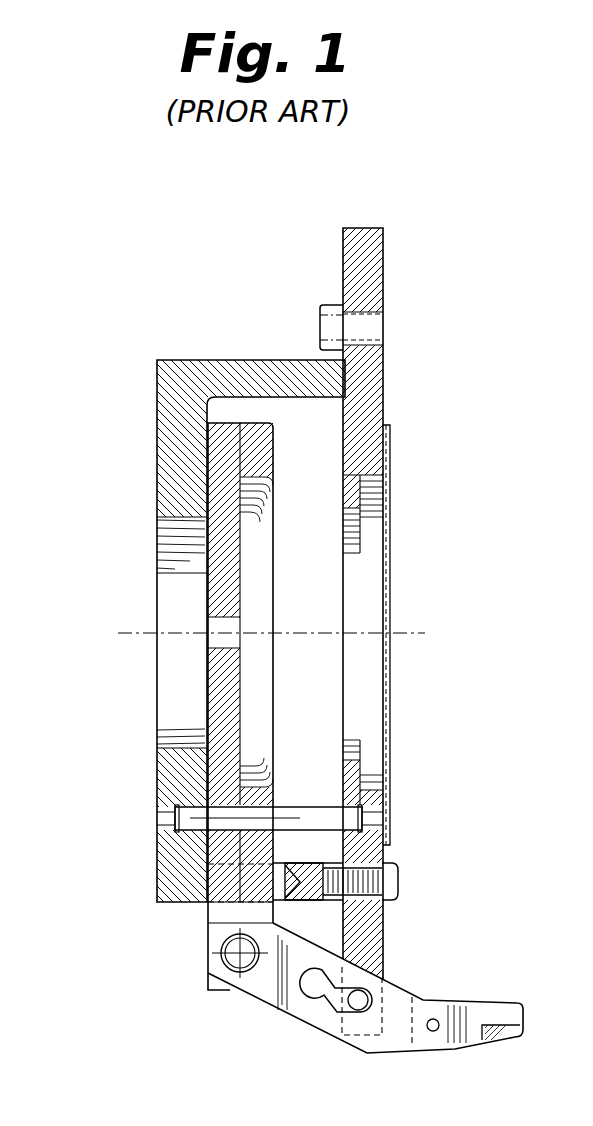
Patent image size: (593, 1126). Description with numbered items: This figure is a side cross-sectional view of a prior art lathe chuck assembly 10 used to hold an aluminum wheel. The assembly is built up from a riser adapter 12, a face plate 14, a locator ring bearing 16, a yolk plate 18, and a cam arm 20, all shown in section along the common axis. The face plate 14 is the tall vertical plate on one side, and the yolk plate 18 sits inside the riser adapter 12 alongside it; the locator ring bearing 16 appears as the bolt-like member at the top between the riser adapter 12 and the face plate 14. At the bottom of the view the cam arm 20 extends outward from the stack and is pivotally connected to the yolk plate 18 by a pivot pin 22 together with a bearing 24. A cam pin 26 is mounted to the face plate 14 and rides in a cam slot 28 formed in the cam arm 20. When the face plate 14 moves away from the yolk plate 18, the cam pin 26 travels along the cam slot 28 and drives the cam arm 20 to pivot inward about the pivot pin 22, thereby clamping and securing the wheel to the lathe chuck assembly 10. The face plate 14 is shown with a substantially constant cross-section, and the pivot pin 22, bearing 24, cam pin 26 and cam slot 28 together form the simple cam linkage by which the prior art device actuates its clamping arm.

The lathe chuck assembly 10 is at (447, 714).
The riser adapter 12 is at (157, 405).
The face plate 14 is at (384, 250).
The locator ring bearing 16 is at (318, 323).
The yolk plate 18 is at (205, 508).
The cam arm 20 is at (462, 1047).
The pivot pin 22 is at (250, 968).
The bearing 24 is at (220, 947).
The cam pin 26 is at (362, 1014).
The cam slot 28 is at (323, 1013).